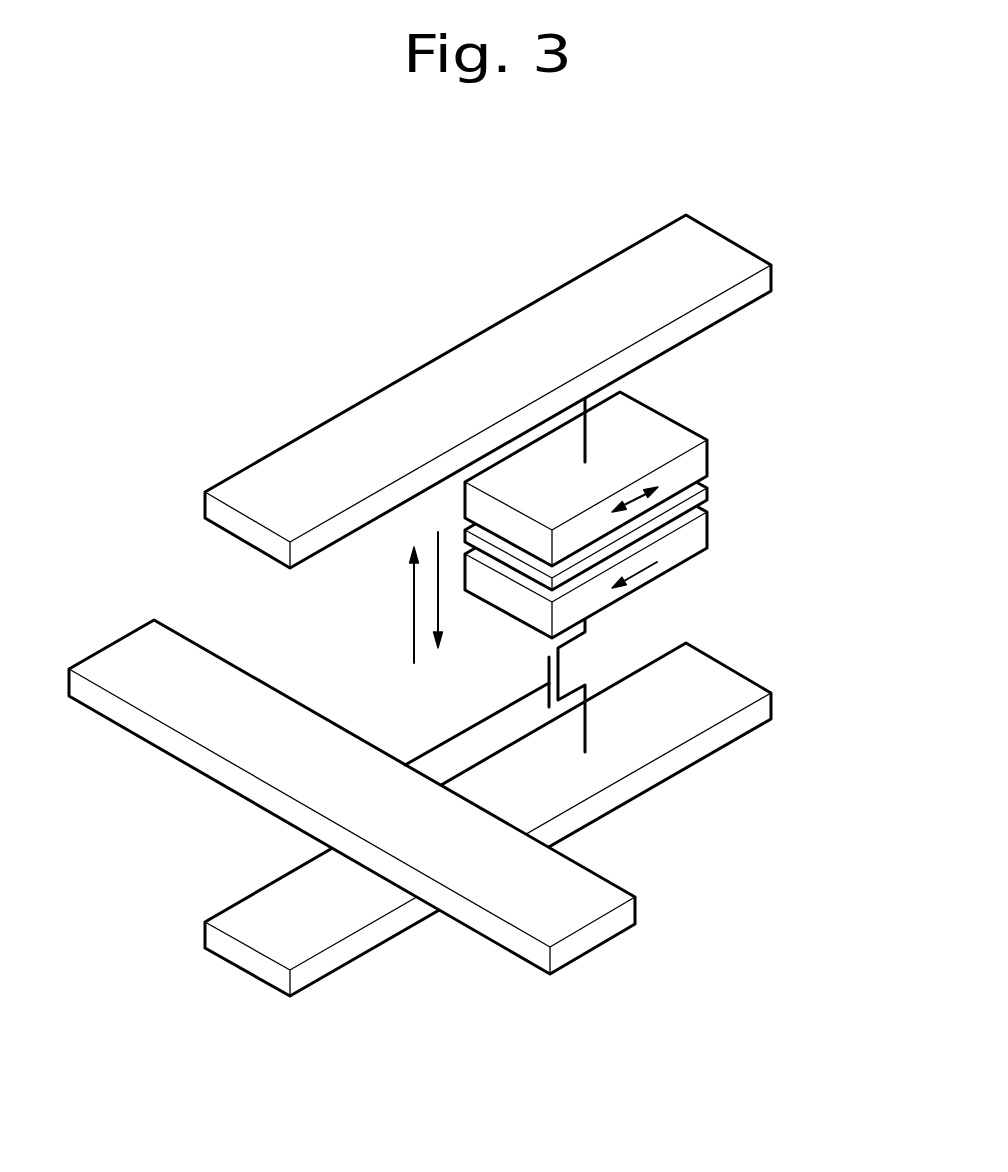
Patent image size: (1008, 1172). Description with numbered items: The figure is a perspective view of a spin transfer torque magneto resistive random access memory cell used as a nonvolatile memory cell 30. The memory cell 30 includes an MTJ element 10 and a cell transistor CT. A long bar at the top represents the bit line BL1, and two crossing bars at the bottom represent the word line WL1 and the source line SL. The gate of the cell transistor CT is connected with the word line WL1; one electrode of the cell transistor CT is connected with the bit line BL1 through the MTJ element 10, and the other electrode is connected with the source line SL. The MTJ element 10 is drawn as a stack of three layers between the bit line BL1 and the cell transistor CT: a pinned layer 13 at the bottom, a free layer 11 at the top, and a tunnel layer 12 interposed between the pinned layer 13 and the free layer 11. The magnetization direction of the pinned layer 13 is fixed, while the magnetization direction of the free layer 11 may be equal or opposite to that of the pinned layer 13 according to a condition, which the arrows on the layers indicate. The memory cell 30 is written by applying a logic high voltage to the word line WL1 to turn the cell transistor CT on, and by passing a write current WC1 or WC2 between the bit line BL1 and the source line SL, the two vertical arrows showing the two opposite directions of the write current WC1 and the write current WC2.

The memory cell 30 is at (688, 171).
The bit line BL1 is at (757, 287).
The word line WL1 is at (288, 717).
The source line SL is at (758, 713).
The cell transistor CT is at (507, 692).
The MTJ element 10 is at (643, 515).
The free layer 11 is at (780, 552).
The tunnel layer 12 is at (693, 500).
The pinned layer 13 is at (695, 540).
The write current WC1 is at (436, 576).
The write current WC2 is at (414, 620).